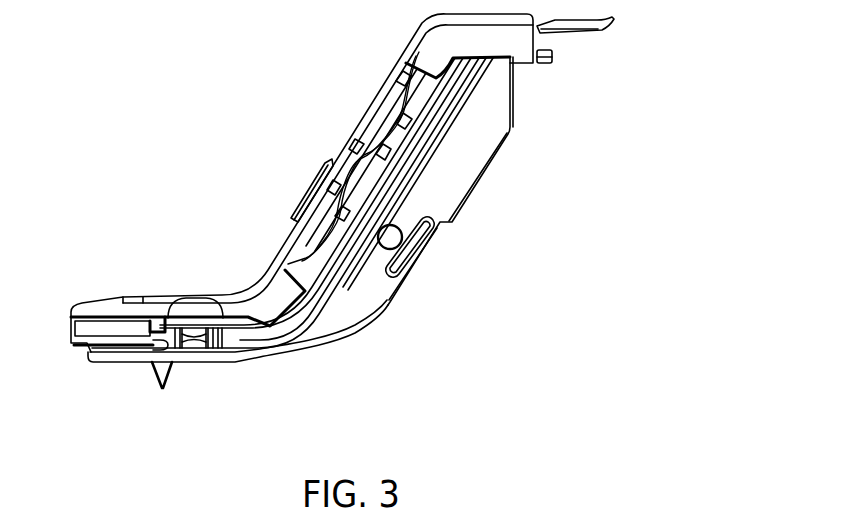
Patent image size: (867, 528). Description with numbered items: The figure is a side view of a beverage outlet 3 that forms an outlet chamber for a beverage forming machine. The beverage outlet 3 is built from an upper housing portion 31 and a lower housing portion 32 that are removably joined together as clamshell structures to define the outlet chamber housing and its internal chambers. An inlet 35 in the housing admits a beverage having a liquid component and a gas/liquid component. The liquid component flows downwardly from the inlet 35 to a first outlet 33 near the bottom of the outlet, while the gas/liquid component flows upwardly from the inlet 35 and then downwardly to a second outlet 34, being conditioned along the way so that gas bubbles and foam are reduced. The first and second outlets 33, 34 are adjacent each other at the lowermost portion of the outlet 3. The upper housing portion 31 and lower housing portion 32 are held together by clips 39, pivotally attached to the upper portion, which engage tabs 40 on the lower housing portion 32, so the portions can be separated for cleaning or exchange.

The beverage outlet 3 is at (197, 70).
The upper housing portion 31 is at (405, 50).
The lower housing portion 32 is at (489, 144).
The first outlet 33 is at (158, 387).
The second outlet 34 is at (113, 365).
The inlet 35 is at (313, 193).
The clips 39 is at (600, 32).
The tabs 40 is at (546, 64).